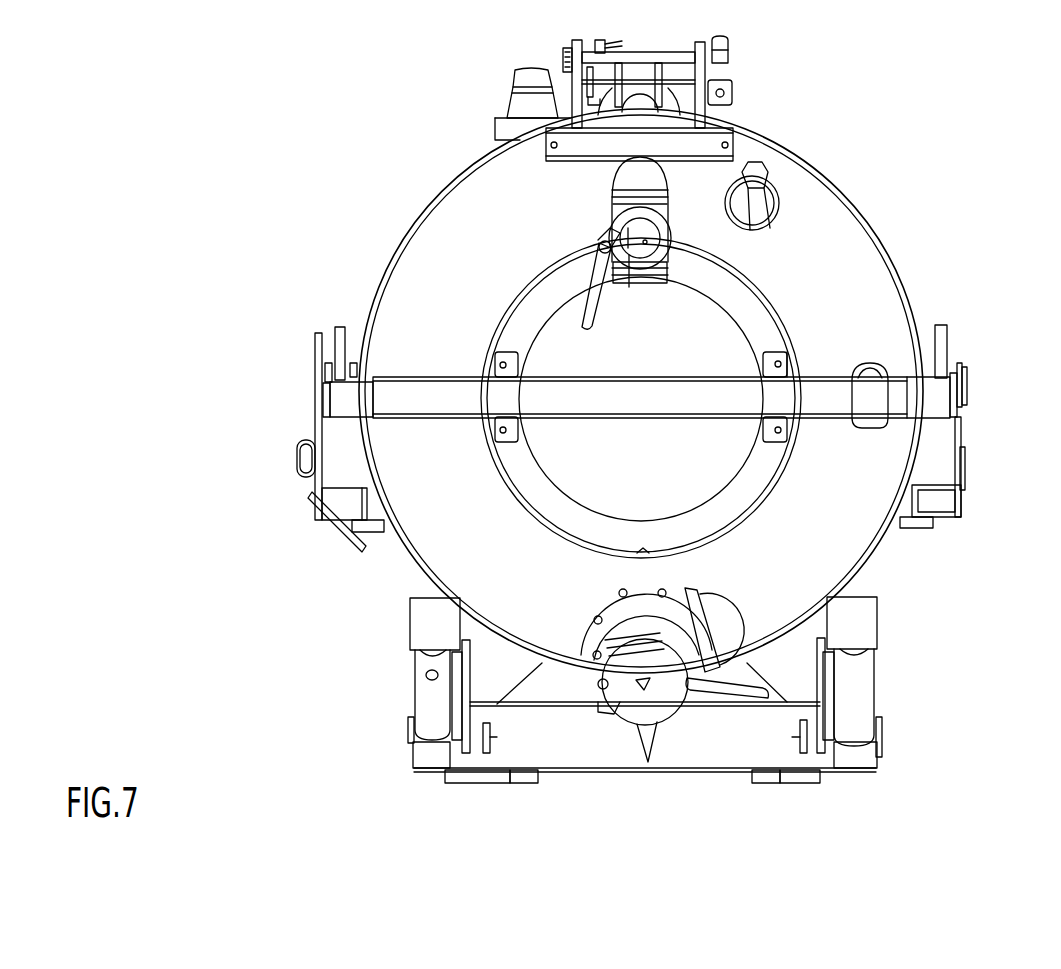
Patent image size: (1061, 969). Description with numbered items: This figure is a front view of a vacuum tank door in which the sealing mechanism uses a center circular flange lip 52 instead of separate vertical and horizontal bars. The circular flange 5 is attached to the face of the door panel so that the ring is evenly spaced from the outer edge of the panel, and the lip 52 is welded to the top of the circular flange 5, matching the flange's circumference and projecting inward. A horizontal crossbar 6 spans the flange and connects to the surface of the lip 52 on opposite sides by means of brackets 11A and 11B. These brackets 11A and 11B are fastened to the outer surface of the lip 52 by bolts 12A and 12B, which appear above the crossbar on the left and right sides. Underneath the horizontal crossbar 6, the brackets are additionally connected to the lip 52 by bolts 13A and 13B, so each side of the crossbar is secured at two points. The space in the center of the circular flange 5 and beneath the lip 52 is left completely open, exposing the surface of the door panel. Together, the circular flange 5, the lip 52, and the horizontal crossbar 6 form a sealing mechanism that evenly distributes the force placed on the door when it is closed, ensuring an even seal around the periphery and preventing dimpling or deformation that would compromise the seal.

The circular flange 5 is at (745, 276).
The horizontal crossbar 6 is at (913, 387).
The bracket 11A is at (790, 368).
The bracket 11B is at (487, 424).
The bolt 12A is at (781, 361).
The bolt 12B is at (497, 355).
The bolt 13A is at (783, 438).
The bolt 13B is at (500, 430).
The center circular flange lip 52 is at (542, 488).